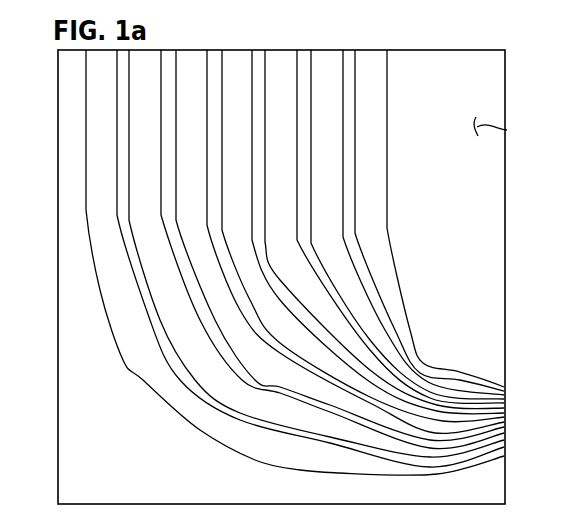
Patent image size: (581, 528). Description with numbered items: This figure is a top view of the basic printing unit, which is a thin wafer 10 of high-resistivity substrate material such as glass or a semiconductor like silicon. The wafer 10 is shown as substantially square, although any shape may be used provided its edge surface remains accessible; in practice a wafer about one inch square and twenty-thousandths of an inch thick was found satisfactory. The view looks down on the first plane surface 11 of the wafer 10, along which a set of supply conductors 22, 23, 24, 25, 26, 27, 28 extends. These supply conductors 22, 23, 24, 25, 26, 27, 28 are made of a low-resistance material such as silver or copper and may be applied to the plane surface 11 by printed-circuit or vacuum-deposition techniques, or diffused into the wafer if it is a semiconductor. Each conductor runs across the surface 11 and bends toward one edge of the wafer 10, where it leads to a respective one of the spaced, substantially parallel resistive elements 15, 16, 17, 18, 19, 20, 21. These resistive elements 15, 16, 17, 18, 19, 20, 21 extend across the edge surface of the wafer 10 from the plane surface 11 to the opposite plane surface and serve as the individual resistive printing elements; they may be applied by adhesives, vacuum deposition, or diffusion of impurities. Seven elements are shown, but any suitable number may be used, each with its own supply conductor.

The thin wafer 10 is at (507, 72).
The first plane surface 11 is at (507, 135).
The resistive element 15 is at (505, 390).
The resistive element 16 is at (505, 398).
The resistive element 17 is at (505, 412).
The resistive element 18 is at (505, 423).
The resistive element 19 is at (505, 430).
The resistive element 20 is at (505, 442).
The resistive element 21 is at (505, 457).
The supply conductor 22 is at (365, 65).
The supply conductor 23 is at (322, 65).
The supply conductor 24 is at (278, 65).
The supply conductor 25 is at (235, 68).
The supply conductor 26 is at (192, 68).
The supply conductor 27 is at (148, 63).
The supply conductor 28 is at (87, 72).